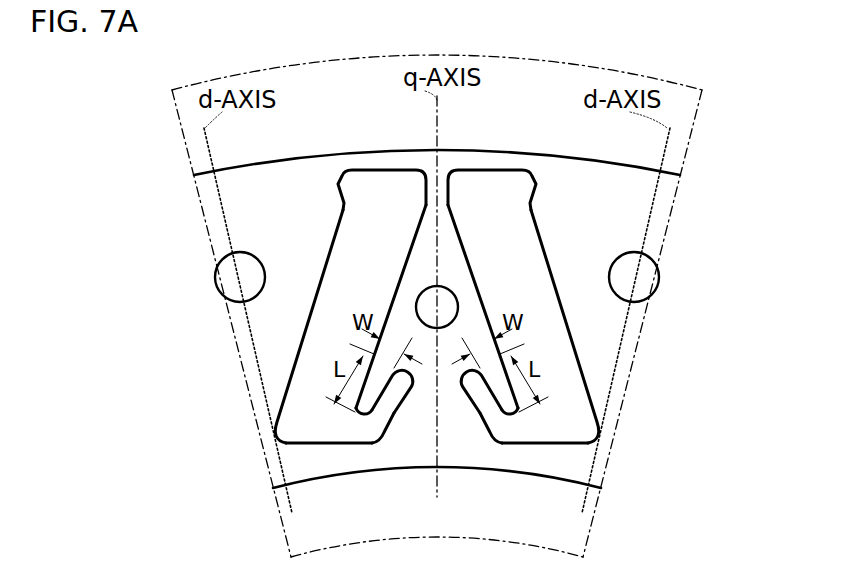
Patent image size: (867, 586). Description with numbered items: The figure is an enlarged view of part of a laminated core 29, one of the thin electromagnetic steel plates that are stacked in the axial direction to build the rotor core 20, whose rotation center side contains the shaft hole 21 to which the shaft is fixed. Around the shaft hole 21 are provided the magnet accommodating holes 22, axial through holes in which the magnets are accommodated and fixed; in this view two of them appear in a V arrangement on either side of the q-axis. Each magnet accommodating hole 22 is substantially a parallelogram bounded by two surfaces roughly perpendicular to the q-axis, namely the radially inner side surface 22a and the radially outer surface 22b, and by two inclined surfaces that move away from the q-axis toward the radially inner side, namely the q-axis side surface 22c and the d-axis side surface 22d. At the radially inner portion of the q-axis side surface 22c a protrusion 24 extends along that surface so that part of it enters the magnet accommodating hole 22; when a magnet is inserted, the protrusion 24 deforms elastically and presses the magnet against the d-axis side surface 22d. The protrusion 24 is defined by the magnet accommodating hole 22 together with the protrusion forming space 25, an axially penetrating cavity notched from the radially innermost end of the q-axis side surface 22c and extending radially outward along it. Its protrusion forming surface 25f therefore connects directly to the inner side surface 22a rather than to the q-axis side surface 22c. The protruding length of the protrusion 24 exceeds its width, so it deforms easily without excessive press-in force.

The rotor core 20 is at (490, 143).
The laminated core 29 is at (668, 172).
The shaft hole 21 is at (580, 488).
The magnet accommodating hole 22 is at (435, 324).
The inner side surface 22a is at (308, 443).
The outer surface 22b is at (365, 172).
The q-axis side surface 22c is at (404, 262).
The d-axis side surface 22d is at (295, 372).
The protrusion 24 is at (358, 412).
The protrusion forming space 25 is at (388, 402).
The protrusion forming surface 25f is at (390, 443).